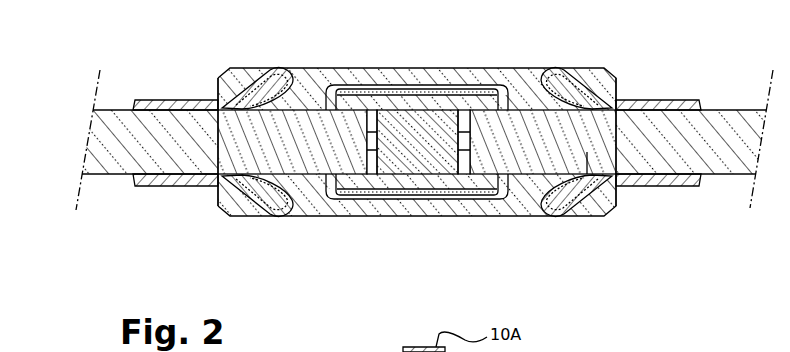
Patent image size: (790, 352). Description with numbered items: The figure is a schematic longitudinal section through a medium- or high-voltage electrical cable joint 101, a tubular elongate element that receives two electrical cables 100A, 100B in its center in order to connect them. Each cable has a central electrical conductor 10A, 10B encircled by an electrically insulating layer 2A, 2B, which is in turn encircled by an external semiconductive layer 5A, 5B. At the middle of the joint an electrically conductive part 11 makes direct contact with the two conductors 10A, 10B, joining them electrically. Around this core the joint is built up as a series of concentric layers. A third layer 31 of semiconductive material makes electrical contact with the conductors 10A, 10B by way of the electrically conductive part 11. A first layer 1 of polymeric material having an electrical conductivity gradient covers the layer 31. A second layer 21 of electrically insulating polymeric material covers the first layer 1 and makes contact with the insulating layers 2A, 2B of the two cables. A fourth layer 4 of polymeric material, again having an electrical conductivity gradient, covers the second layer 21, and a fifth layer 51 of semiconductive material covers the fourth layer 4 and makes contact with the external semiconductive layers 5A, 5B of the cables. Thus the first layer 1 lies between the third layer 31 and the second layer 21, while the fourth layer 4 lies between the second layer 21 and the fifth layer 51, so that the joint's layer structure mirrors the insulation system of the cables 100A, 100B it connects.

The first layer 1 is at (486, 100).
The electrically insulating layer 2A is at (308, 153).
The electrically insulating layer 2B is at (607, 188).
The fourth layer 4 is at (285, 80).
The external semiconductive layer 5A is at (122, 153).
The external semiconductive layer 5B is at (723, 137).
The electrical conductor 10A is at (372, 170).
The electrical conductor 10B is at (478, 153).
The electrically conductive part 11 is at (430, 140).
The second layer 21 is at (300, 97).
The third layer 31 is at (392, 92).
The fifth layer 51 is at (242, 80).
The electrical cable 100A is at (97, 180).
The electrical cable 100B is at (718, 182).
The electrical cable joint 101 is at (272, 226).